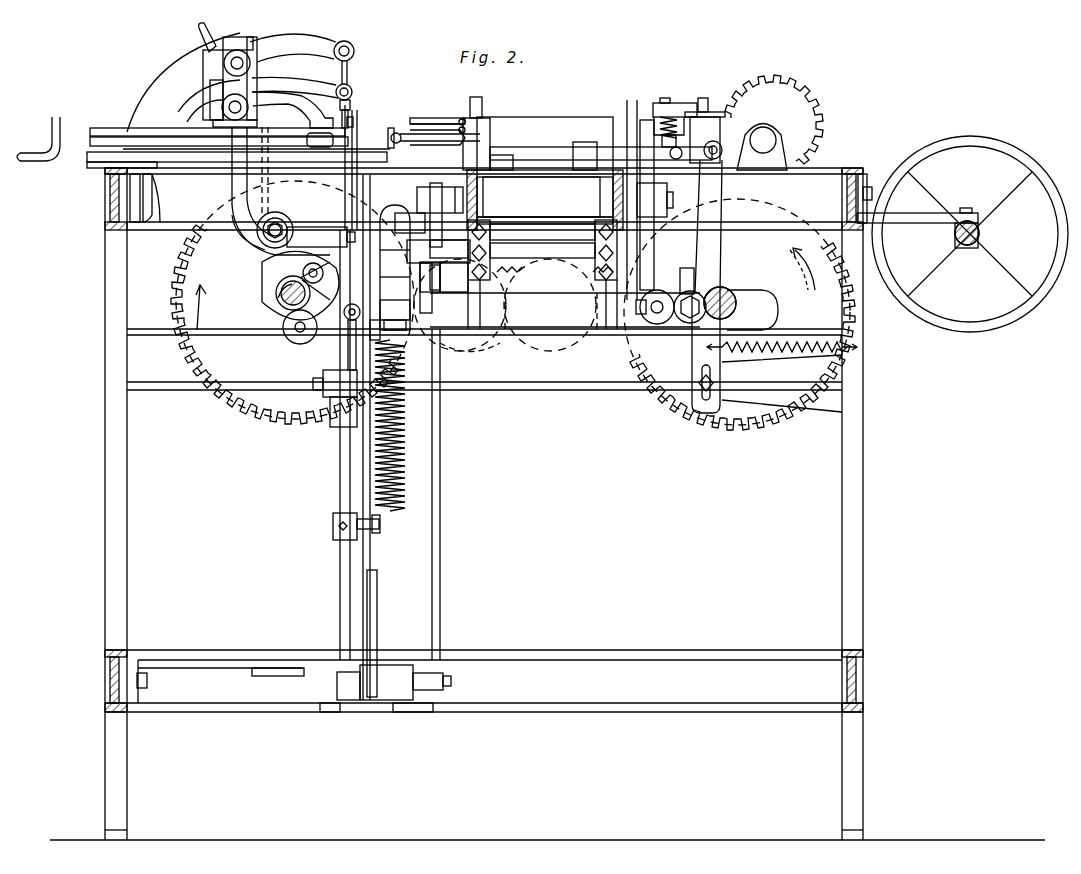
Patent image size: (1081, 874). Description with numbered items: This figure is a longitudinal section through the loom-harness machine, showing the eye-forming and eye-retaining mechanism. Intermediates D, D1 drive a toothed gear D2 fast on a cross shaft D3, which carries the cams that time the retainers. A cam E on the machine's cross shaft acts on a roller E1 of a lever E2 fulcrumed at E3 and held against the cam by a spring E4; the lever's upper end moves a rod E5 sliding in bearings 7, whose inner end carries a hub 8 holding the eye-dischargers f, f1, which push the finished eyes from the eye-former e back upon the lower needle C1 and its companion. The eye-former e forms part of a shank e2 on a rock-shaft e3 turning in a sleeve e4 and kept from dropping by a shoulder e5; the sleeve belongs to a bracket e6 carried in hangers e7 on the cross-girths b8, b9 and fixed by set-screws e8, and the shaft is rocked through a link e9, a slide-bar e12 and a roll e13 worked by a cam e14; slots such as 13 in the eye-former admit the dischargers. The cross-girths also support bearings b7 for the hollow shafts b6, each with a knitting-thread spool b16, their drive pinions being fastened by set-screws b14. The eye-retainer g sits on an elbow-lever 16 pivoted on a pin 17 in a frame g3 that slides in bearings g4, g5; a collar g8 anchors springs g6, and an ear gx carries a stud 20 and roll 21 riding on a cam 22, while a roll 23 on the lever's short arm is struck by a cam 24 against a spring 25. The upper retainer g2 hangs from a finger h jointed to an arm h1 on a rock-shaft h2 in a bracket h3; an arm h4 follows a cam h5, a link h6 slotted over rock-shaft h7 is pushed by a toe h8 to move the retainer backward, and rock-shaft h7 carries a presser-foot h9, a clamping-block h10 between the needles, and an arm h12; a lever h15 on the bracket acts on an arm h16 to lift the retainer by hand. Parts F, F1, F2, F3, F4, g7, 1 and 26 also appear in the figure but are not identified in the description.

The finger h is at (338, 73).
The arm h1 is at (310, 36).
The rock-shaft h2 is at (252, 65).
The bracket h3 is at (295, 280).
The arm h4 is at (232, 190).
The cam h5 is at (293, 110).
The link h6 is at (302, 76).
The rock-shaft h7 is at (205, 114).
The toe h8 is at (205, 90).
The presser-foot h9 is at (234, 37).
The auxiliary clamping-block h10 is at (314, 139).
The arm h12 is at (228, 208).
The lever h15 is at (199, 35).
The arm h16 is at (198, 60).
The eye-retainer g is at (358, 150).
The loop-retainer g2 is at (355, 135).
The frame g3 is at (343, 447).
The bearing g4 is at (365, 664).
The bearing g5 is at (360, 198).
The spiral springs g6 is at (395, 480).
The stop g7 is at (382, 524).
The collar g8 is at (333, 527).
The ear gx is at (321, 237).
The intermediate gear D is at (557, 305).
The intermediate gear D1 is at (473, 353).
The toothed gear D2 is at (282, 302).
The shaft D3 is at (262, 296).
The cam E is at (768, 305).
The roller E1 is at (690, 340).
The lever E2 is at (722, 255).
The fulcrum E3 is at (722, 380).
The spring E4 is at (808, 358).
The rod E5 is at (601, 152).
The gear wheel F is at (825, 300).
The bearing bracket F1 is at (776, 140).
The pinion F2 is at (795, 105).
The ratchet F3 is at (735, 420).
The shaft F4 is at (724, 292).
The hollow shaft b6 is at (565, 125).
The bearing b7 is at (655, 200).
The cross-girth b8 is at (606, 192).
The cross-girth b9 is at (478, 208).
The set-screws b14 is at (697, 110).
The spool b16 is at (660, 103).
The eye-former e is at (422, 215).
The shank e2 is at (425, 218).
The rock-shaft e3 is at (412, 288).
The bearing sleeve e4 is at (428, 267).
The head or shoulder e5 is at (407, 219).
The bracket e6 is at (470, 258).
The hangers e7 is at (490, 240).
The set-screws e8 is at (542, 245).
The link e9 is at (392, 316).
The slide-bar e12 is at (551, 311).
The roll e13 is at (666, 295).
The cam e14 is at (693, 273).
The eye-discharger f is at (438, 128).
The eye-discharger f1 is at (440, 148).
The needle C1 is at (380, 150).
The post 1 is at (640, 200).
The bearings 7 is at (543, 156).
The hub 8 is at (478, 133).
The slot 13 is at (287, 272).
The elbow-lever 16 is at (320, 325).
The pin 17 is at (339, 345).
The stud 20 is at (283, 221).
The roll 21 is at (275, 226).
The cam 22 is at (280, 272).
The anti-friction roll 23 is at (296, 335).
The cam 24 is at (316, 280).
The spring 25 is at (316, 296).
The lug 26 is at (268, 286).